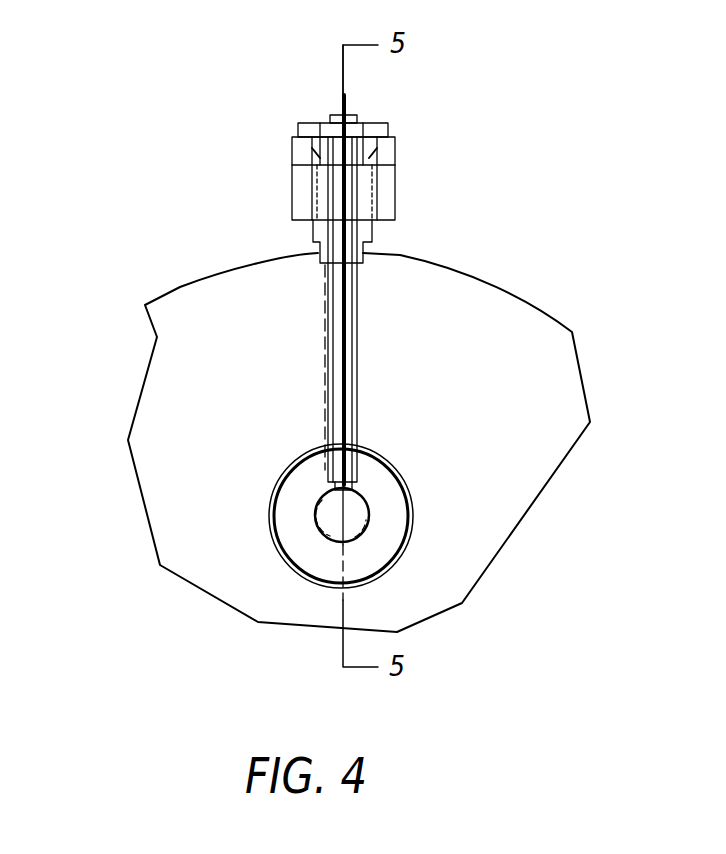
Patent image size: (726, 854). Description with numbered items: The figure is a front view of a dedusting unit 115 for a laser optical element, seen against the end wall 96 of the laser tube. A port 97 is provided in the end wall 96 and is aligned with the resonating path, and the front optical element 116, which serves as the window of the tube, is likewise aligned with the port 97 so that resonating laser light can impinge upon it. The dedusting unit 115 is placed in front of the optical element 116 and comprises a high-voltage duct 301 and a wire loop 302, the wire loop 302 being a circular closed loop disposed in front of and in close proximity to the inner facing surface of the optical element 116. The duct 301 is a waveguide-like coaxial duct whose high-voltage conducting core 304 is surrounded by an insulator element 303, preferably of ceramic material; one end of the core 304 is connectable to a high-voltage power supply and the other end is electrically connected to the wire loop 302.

The end wall 96 is at (552, 370).
The port 97 is at (407, 473).
The dedusting unit 115 is at (377, 229).
The front optical element 116 is at (292, 467).
The high-voltage duct 301 is at (323, 393).
The wire loop 302 is at (343, 542).
The insulator element 303 is at (333, 310).
The high-voltage conducting core 304 is at (342, 100).